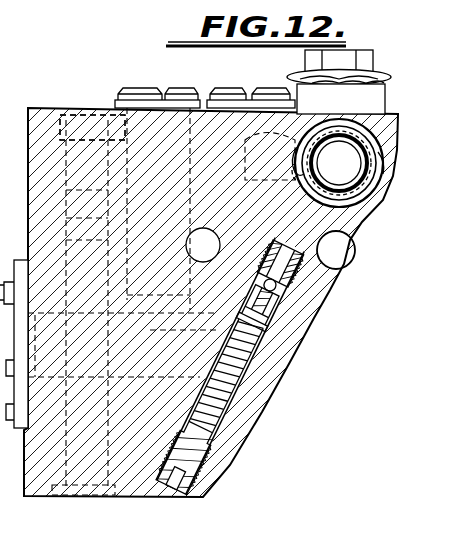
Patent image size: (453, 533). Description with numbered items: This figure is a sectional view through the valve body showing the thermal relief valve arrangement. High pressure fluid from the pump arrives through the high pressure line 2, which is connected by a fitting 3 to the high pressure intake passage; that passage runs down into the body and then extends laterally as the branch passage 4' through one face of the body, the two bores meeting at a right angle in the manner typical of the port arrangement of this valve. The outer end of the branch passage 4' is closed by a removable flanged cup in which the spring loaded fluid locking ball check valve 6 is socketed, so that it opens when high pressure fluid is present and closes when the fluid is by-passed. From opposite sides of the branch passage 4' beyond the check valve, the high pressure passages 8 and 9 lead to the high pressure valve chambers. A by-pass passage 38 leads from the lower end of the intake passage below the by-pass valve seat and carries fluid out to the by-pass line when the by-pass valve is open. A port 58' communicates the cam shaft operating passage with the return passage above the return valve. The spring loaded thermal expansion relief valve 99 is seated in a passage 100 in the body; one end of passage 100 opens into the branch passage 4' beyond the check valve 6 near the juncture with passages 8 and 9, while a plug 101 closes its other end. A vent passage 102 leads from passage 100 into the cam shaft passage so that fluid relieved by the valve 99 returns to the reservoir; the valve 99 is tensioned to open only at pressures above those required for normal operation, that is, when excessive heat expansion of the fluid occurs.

The high pressure line 2 is at (373, 46).
The fitting 3 is at (378, 100).
The lateral branch of high pressure intake passage 4' is at (226, 294).
The ball check valve 6 is at (345, 163).
The high pressure passage 8 is at (298, 146).
The high pressure passage 9 is at (380, 175).
The by-pass passage 38 is at (352, 252).
The port 58' is at (86, 101).
The thermal expansion relief valve 99 is at (293, 303).
The passage 100 is at (256, 345).
The plug 101 is at (178, 482).
The vent passage 102 is at (276, 318).